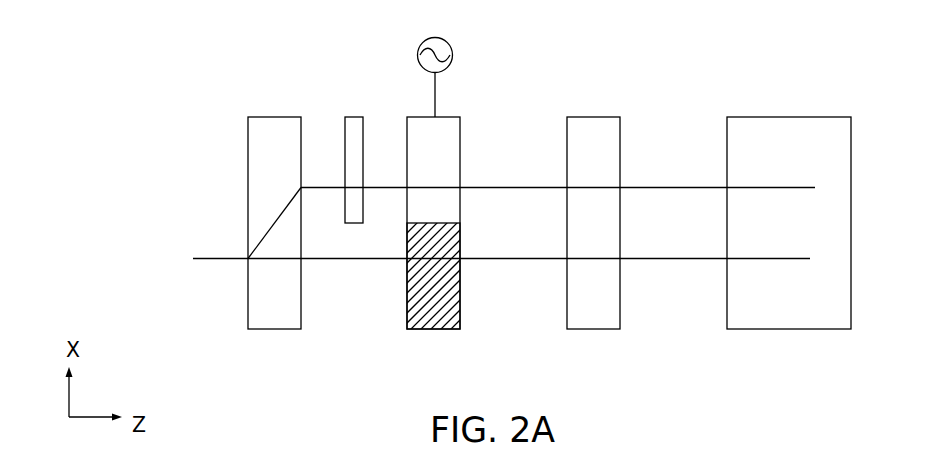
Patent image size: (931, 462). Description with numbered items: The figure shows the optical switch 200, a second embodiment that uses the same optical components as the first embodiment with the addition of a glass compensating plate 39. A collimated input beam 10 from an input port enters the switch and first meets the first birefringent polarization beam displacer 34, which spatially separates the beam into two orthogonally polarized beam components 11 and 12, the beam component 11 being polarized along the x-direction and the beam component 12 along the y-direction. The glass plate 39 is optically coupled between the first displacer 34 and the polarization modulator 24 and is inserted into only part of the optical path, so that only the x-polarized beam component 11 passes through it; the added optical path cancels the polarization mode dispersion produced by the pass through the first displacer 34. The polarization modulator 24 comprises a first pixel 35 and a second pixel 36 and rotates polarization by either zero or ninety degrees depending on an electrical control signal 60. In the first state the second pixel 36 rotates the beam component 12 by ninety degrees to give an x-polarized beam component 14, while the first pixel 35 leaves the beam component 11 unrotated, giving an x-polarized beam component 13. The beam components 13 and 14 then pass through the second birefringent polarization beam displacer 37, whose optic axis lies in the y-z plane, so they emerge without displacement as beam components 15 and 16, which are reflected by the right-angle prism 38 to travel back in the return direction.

The optical switch 200 is at (220, 57).
The collimated input beam 10 is at (149, 259).
The first birefringent polarization beam displacer 34 is at (276, 117).
The beam component 11 is at (322, 187).
The beam component 12 is at (355, 259).
The glass compensating plate 39 is at (353, 117).
The first pixel 35 is at (407, 138).
The second pixel 36 is at (437, 293).
The electrical control signal 60 is at (449, 44).
The polarization modulator 24 is at (459, 109).
The beam component 13 is at (524, 187).
The beam component 14 is at (513, 260).
The second birefringent polarization beam displacer 37 is at (595, 117).
The beam component 15 is at (671, 187).
The beam component 16 is at (673, 260).
The right-angle prism 38 is at (788, 117).